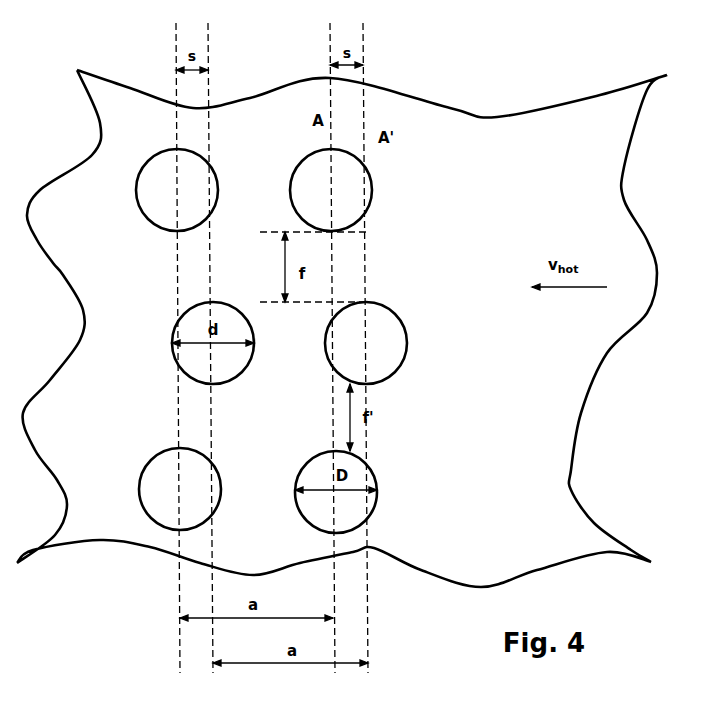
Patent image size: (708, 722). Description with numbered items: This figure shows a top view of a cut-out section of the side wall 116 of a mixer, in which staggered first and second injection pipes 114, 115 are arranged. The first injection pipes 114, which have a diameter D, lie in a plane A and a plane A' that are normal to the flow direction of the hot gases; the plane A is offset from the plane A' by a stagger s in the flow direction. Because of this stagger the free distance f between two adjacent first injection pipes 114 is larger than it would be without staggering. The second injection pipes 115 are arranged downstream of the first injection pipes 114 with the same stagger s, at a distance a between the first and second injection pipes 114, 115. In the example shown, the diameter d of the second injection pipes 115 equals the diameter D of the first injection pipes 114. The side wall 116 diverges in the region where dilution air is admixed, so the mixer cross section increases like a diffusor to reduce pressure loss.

The first injection pipes 114 is at (378, 463).
The second injection pipes 115 is at (150, 453).
The side wall 116 is at (443, 515).